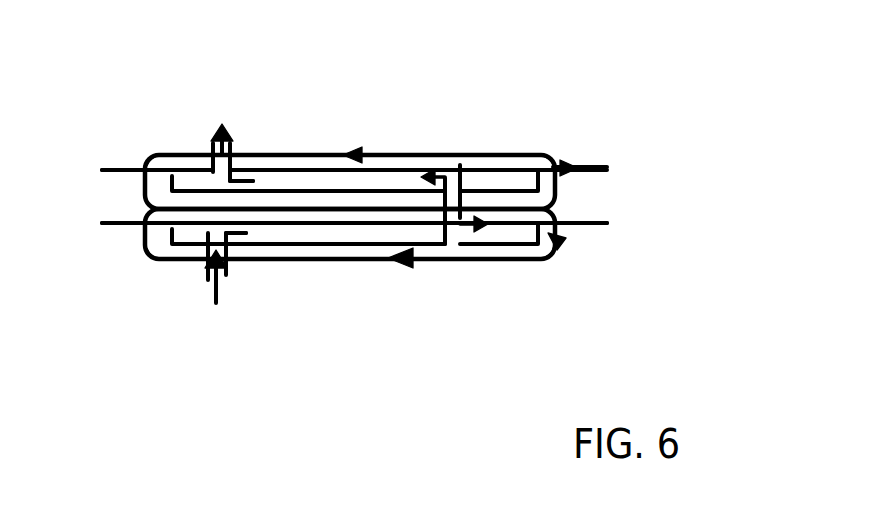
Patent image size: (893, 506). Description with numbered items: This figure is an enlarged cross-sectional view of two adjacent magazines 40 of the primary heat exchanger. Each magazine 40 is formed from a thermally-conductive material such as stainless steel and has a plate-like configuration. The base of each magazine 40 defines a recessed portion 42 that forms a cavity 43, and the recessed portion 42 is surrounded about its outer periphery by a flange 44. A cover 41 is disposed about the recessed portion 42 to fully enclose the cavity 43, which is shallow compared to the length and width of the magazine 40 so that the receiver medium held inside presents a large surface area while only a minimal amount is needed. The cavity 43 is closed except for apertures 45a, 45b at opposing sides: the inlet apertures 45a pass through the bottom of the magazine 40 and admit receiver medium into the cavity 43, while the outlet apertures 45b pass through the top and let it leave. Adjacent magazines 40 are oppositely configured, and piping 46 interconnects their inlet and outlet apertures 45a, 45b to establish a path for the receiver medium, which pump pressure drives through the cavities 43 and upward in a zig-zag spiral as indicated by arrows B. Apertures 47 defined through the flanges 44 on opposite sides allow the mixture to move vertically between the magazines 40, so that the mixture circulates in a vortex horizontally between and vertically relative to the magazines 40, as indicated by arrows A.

The magazine 40 is at (579, 156).
The cover 41 is at (320, 165).
The recessed portion 42 is at (505, 166).
The cavity 43 is at (363, 160).
The flange 44 is at (120, 172).
The inlet apertures 45a is at (463, 178).
The outlet apertures 45b is at (205, 150).
The piping 46 is at (232, 146).
The flange apertures 47 is at (192, 122).
The mixture flow arrows A is at (186, 152).
The receiver medium flow arrows B is at (337, 235).